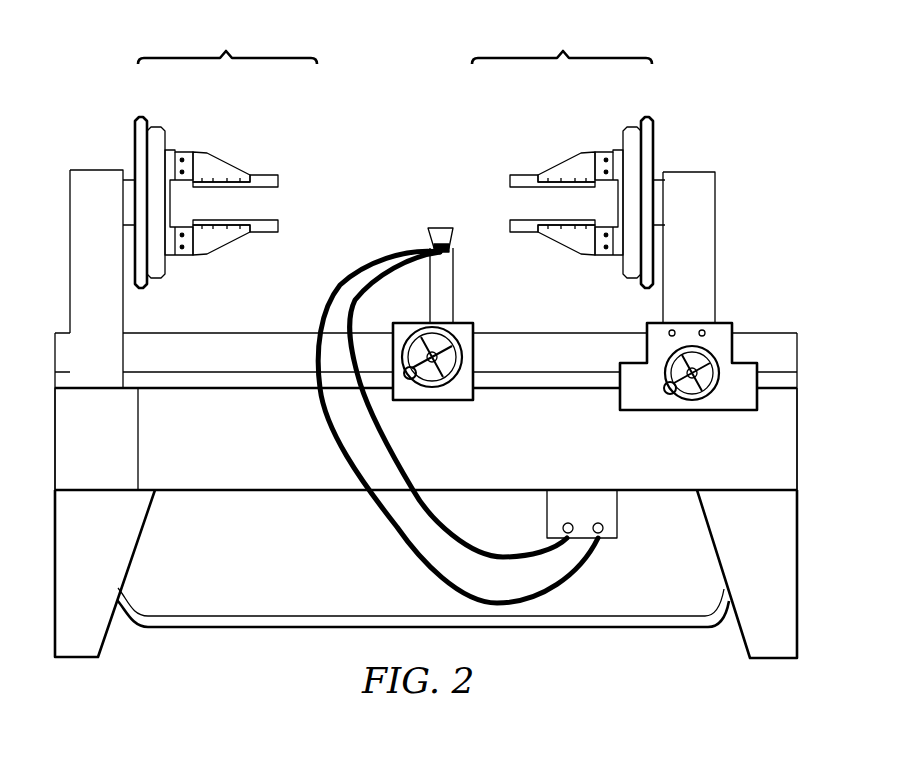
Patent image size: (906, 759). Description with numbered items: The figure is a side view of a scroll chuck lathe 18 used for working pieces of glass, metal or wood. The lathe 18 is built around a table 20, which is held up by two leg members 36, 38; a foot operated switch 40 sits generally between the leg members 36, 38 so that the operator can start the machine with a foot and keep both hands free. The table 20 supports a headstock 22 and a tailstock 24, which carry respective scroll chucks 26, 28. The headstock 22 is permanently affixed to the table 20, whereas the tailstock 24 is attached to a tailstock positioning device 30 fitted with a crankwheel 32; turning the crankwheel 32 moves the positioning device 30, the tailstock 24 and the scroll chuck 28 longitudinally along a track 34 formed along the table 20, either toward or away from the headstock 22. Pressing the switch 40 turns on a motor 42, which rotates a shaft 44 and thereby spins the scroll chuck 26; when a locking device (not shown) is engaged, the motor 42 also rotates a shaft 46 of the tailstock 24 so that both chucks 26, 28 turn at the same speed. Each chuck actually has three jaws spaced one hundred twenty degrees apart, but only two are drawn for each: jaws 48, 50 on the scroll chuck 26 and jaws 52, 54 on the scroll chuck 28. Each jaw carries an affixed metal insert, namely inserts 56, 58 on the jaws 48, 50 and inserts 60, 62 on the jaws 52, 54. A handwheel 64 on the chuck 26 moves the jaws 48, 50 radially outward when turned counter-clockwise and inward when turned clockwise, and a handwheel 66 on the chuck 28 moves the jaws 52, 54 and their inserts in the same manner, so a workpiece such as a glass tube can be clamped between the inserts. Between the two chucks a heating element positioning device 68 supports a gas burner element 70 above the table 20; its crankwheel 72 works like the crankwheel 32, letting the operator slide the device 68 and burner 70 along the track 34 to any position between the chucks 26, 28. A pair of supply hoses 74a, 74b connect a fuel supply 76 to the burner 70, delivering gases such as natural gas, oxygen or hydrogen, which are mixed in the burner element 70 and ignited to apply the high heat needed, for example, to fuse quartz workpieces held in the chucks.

The lathe 18 is at (788, 156).
The table 20 is at (301, 456).
The headstock 22 is at (111, 253).
The tailstock 24 is at (704, 256).
The scroll chuck 26 is at (207, 156).
The scroll chuck 28 is at (583, 156).
The tailstock positioning device 30 is at (725, 323).
The crankwheel 32 is at (713, 400).
The track 34 is at (565, 391).
The leg member 36 is at (99, 566).
The leg member 38 is at (773, 568).
The foot operated switch 40 is at (268, 630).
The motor 42 is at (111, 456).
The shaft 44 is at (131, 176).
The shaft 46 is at (657, 176).
The jaw 48 is at (222, 162).
The jaw 50 is at (222, 244).
The jaw 52 is at (566, 162).
The jaw 54 is at (566, 244).
The metal insert 56 is at (266, 176).
The metal insert 58 is at (268, 233).
The metal insert 60 is at (519, 176).
The metal insert 62 is at (517, 233).
The handwheel 64 is at (137, 116).
The handwheel 66 is at (651, 116).
The heating element positioning device 68 is at (468, 324).
The gas burner element 70 is at (428, 238).
The crankwheel 72 is at (410, 328).
The supply hose 74a is at (493, 552).
The supply hose 74b is at (398, 548).
The fuel supply 76 is at (618, 520).